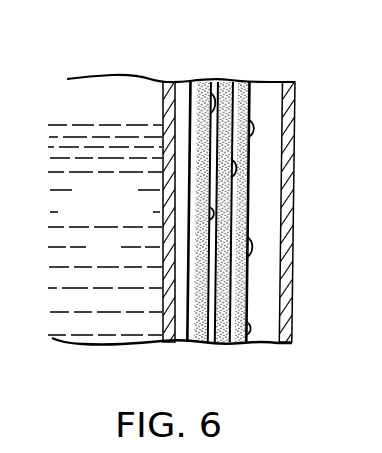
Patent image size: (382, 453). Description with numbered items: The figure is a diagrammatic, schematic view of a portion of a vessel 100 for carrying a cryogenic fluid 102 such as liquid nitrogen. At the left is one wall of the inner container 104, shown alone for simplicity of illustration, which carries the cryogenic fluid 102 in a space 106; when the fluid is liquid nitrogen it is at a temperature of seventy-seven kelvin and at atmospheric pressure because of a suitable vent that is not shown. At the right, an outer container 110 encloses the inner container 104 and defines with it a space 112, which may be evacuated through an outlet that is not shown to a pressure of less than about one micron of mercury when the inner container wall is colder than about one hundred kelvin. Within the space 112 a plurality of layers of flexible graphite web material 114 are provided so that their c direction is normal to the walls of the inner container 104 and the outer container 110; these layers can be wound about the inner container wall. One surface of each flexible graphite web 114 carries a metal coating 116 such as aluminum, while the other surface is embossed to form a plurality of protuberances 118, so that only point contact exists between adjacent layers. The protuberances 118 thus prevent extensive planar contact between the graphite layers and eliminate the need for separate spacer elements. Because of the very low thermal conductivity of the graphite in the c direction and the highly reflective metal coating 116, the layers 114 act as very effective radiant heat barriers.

The vessel 100 is at (300, 100).
The cryogenic fluid 102 is at (120, 257).
The inner container 104 is at (186, 83).
The space 106 is at (126, 114).
The outer container 110 is at (291, 277).
The space 112 is at (275, 208).
The flexible graphite web material 114 is at (242, 81).
The metal coating 116 is at (219, 370).
The protuberances 118 is at (251, 124).